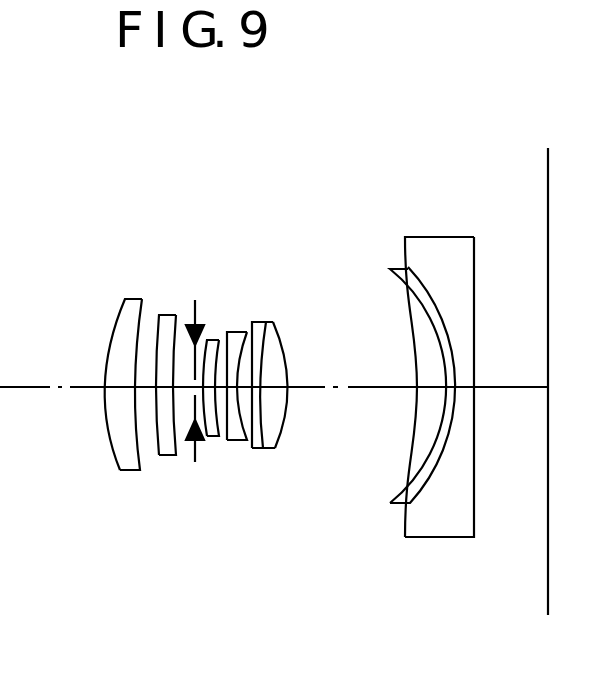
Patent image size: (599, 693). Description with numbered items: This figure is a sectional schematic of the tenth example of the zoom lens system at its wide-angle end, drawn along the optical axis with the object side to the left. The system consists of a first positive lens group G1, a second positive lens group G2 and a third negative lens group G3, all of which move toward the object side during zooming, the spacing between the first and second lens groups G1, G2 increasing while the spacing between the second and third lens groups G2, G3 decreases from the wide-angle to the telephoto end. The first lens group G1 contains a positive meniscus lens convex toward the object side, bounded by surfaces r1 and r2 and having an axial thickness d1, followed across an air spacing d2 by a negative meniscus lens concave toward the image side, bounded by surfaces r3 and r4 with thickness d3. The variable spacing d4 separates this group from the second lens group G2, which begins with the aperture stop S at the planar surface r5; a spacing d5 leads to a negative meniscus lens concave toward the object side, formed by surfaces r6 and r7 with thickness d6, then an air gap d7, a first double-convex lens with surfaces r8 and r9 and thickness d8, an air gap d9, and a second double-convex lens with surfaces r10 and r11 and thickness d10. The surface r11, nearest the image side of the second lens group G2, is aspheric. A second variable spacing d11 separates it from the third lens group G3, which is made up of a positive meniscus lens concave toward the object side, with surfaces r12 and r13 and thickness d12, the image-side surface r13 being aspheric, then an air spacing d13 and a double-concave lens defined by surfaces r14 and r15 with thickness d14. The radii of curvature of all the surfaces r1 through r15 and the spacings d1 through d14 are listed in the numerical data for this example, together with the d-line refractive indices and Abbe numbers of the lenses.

The first positive lens group G1 is at (170, 180).
The second positive lens group G2 is at (272, 180).
The third negative lens group G3 is at (482, 180).
The aperture stop S is at (193, 318).
The radius of curvature of first lens surface r1 is at (117, 333).
The radius of curvature of second lens surface r2 is at (130, 335).
The radius of curvature of third lens surface r3 is at (153, 337).
The radius of curvature of fourth lens surface r4 is at (175, 342).
The radius of curvature of fifth surface (stop) r5 is at (207, 338).
The radius of curvature of sixth lens surface r6 is at (219, 340).
The radius of curvature of seventh lens surface r7 is at (232, 332).
The radius of curvature of eighth lens surface r8 is at (248, 335).
The radius of curvature of ninth lens surface r9 is at (254, 323).
The radius of curvature of tenth lens surface r10 is at (266, 322).
The radius of curvature of eleventh lens surface r11 is at (283, 350).
The radius of curvature of twelfth lens surface r12 is at (398, 300).
The radius of curvature of thirteenth lens surface r13 is at (396, 270).
The radius of curvature of fourteenth lens surface r14 is at (412, 285).
The radius of curvature of fifteenth lens surface r15 is at (476, 278).
The spacing between first and second lens surfaces d1 is at (124, 392).
The spacing between second and third lens surfaces d2 is at (146, 392).
The spacing between third and fourth lens surfaces d3 is at (160, 392).
The spacing between fourth and fifth surfaces d4 is at (186, 392).
The spacing between fifth and sixth surfaces d5 is at (209, 395).
The spacing between sixth and seventh lens surfaces d6 is at (221, 395).
The spacing between seventh and eighth lens surfaces d7 is at (238, 425).
The spacing between eighth and ninth lens surfaces d8 is at (250, 425).
The spacing between ninth and tenth lens surfaces d9 is at (262, 428).
The spacing between tenth and eleventh lens surfaces d10 is at (277, 405).
The spacing between eleventh and twelfth lens surfaces d11 is at (341, 407).
The spacing between twelfth and thirteenth lens surfaces d12 is at (428, 400).
The spacing between thirteenth and fourteenth lens surfaces d13 is at (432, 392).
The spacing between fourteenth and fifteenth lens surfaces d14 is at (456, 400).